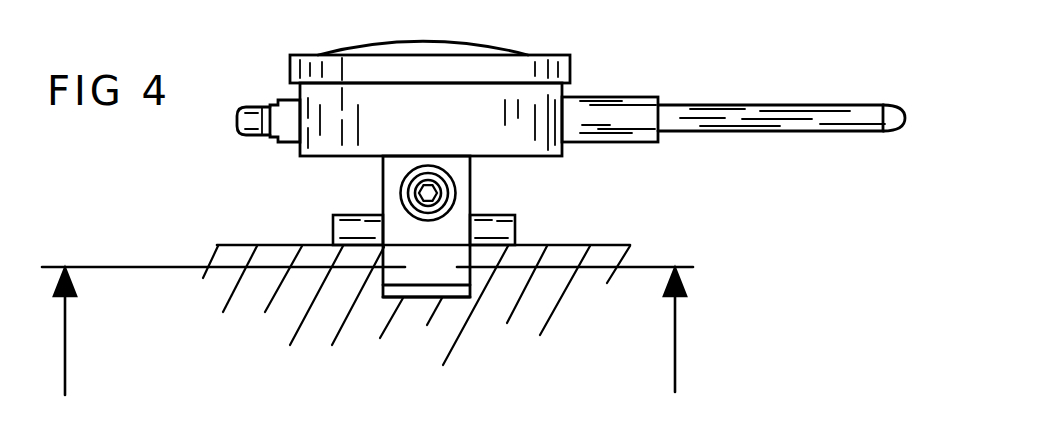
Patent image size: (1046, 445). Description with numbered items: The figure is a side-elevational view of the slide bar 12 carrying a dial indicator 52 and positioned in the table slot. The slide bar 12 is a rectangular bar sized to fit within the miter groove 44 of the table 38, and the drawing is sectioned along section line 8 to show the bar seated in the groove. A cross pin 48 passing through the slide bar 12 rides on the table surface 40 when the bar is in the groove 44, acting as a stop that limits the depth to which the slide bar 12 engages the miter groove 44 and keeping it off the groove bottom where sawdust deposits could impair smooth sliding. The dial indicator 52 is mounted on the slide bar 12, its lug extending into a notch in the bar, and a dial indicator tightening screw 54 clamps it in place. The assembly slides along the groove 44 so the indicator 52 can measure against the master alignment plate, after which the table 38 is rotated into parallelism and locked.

The section line 8- 8 is at (369, 351).
The slide bar 12 is at (472, 190).
The table 38 is at (257, 328).
The table surface 40 is at (240, 246).
The miter groove 44 is at (410, 297).
The cross pin 48 is at (500, 245).
The dial indicator 52 is at (563, 107).
The dial indicator tightening screw 54 is at (402, 192).